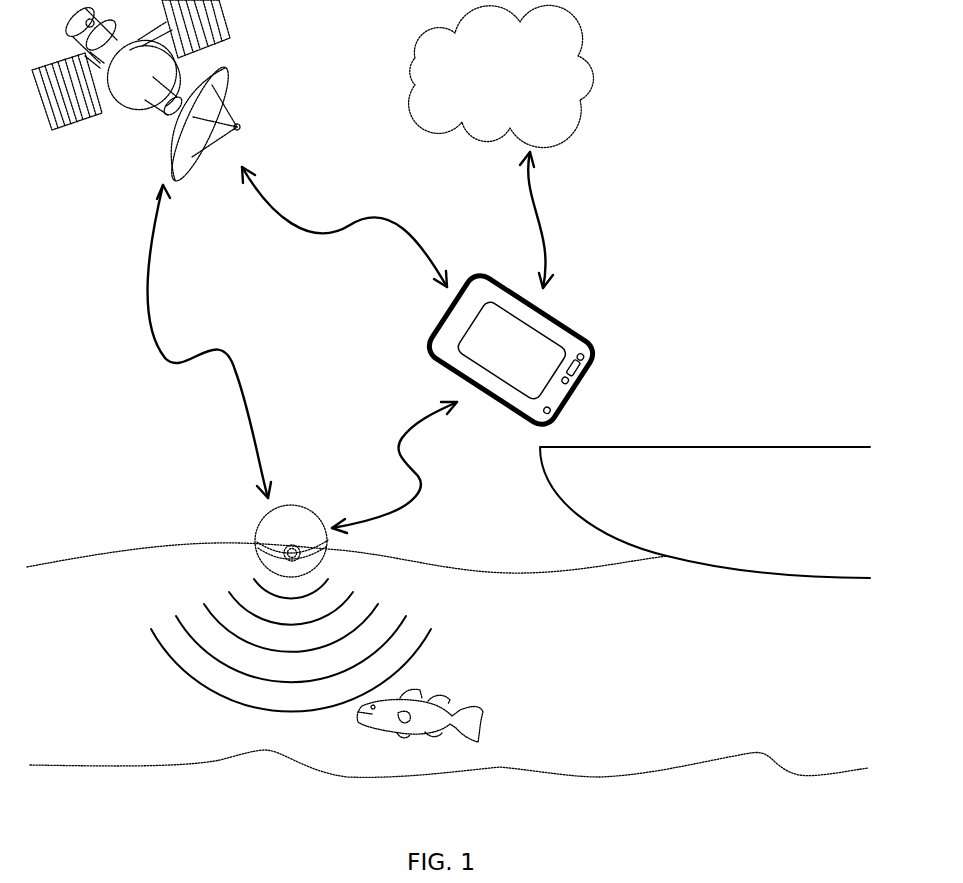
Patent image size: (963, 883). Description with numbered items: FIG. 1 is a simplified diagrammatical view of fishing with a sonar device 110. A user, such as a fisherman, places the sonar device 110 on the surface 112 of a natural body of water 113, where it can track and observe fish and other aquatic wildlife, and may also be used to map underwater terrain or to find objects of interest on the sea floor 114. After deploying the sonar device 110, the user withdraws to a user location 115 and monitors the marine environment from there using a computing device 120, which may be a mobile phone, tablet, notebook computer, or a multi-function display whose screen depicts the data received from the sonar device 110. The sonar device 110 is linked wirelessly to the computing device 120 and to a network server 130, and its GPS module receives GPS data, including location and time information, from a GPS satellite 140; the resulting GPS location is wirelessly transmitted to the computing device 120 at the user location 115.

The sonar device 110 is at (308, 503).
The surface 112 is at (125, 542).
The natural body of water 113 is at (496, 682).
The sea floor 114 is at (115, 755).
The user location 115 is at (705, 512).
The computing device 120 is at (602, 333).
The network server 130 is at (501, 76).
The GPS satellite 140 is at (240, 72).